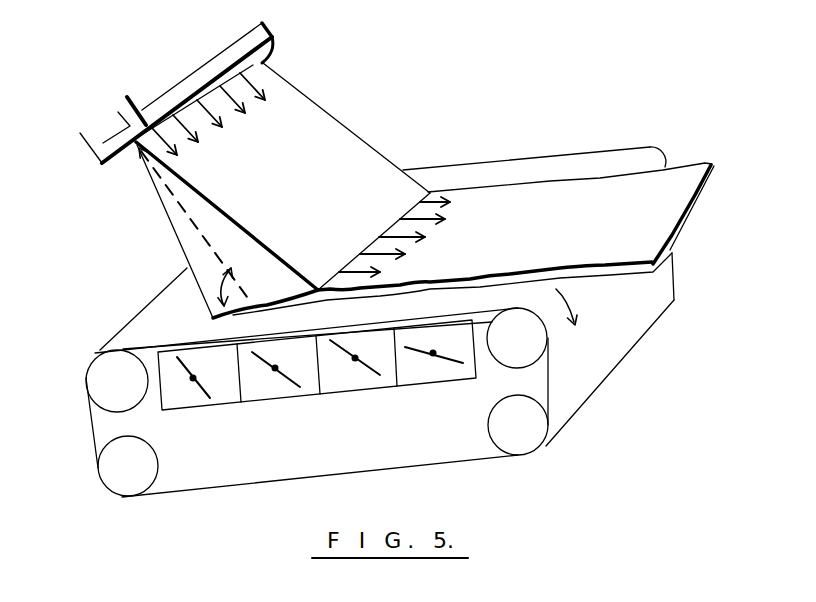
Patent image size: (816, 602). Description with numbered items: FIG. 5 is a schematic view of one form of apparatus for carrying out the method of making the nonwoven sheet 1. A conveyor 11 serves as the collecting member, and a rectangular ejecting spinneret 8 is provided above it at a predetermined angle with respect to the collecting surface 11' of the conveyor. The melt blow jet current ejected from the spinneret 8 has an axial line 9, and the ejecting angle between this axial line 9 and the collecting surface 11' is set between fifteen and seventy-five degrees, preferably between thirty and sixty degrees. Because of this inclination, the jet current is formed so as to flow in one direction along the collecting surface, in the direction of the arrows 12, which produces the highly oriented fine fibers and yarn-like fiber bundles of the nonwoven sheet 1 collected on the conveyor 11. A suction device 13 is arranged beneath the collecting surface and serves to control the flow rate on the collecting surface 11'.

The nonwoven sheet 1 is at (594, 176).
The ejecting spinneret 8 is at (273, 37).
The axial line 9 is at (164, 203).
The conveyor 11 is at (405, 322).
The collecting surface 11' is at (113, 309).
The arrows 12 is at (432, 200).
The suction device 13 is at (478, 368).